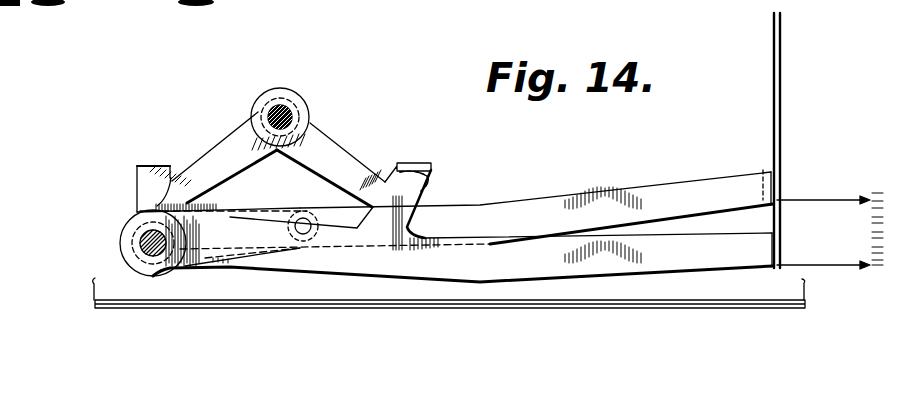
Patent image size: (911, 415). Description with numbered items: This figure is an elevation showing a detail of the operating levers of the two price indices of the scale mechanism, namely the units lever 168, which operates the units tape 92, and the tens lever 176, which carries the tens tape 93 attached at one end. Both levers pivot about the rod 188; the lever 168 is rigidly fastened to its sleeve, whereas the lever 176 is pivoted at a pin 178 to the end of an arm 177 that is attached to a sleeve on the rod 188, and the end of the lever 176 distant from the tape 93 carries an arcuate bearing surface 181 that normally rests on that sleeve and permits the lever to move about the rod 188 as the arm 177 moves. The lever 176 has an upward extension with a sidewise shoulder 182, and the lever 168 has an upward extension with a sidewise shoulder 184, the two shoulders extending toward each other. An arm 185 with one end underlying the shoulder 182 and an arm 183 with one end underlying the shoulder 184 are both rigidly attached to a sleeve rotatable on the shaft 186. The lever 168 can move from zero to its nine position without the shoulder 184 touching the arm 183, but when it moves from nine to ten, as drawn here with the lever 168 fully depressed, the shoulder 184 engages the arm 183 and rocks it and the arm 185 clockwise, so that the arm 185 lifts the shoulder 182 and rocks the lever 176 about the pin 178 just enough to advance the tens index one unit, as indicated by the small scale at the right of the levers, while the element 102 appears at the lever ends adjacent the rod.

The tape 92 is at (781, 100).
The tape 93 is at (768, 168).
The arm end contact 102 is at (775, 218).
The lever 168 is at (588, 265).
The lever 176 is at (327, 213).
The arm 177 is at (256, 215).
The pin 178 is at (305, 222).
The arcuate bearing surface 181 is at (140, 213).
The sidewise shoulder 182 is at (140, 166).
The arm 183 is at (330, 152).
The sidewise shoulder 184 is at (430, 165).
The arm 185 is at (225, 149).
The shaft 186 is at (293, 117).
The rod 188 is at (140, 239).